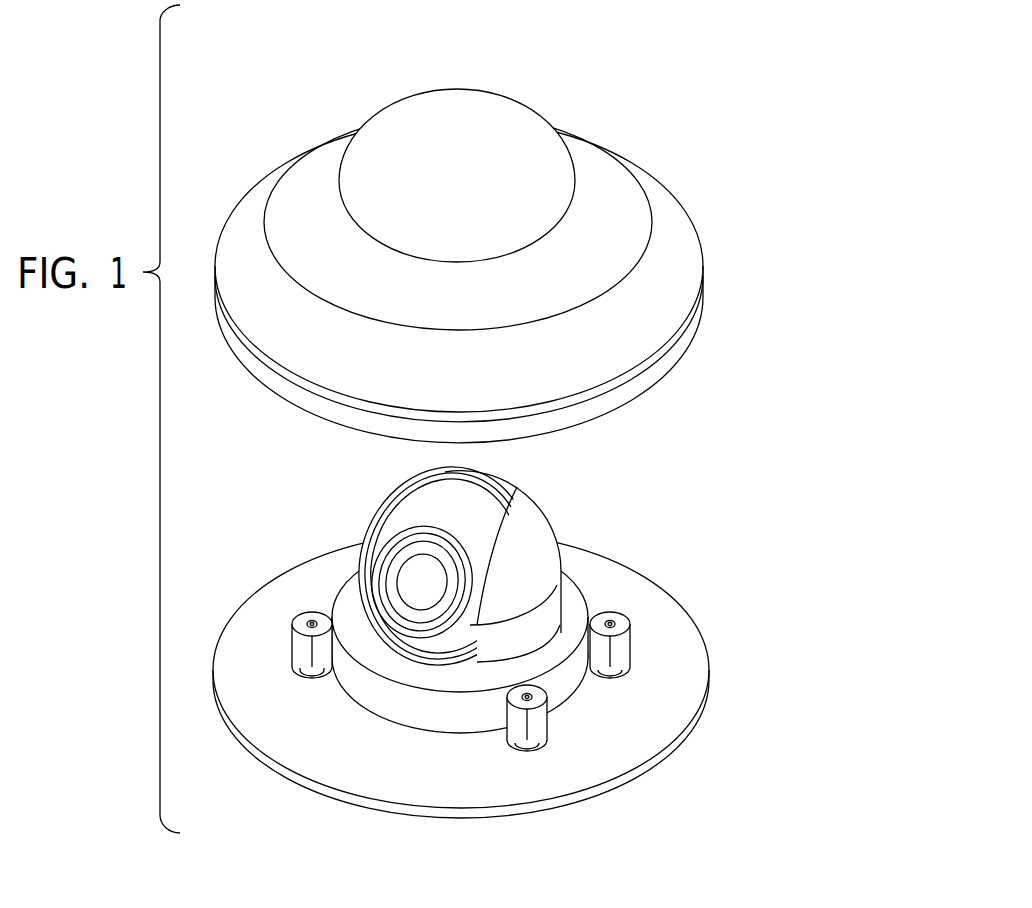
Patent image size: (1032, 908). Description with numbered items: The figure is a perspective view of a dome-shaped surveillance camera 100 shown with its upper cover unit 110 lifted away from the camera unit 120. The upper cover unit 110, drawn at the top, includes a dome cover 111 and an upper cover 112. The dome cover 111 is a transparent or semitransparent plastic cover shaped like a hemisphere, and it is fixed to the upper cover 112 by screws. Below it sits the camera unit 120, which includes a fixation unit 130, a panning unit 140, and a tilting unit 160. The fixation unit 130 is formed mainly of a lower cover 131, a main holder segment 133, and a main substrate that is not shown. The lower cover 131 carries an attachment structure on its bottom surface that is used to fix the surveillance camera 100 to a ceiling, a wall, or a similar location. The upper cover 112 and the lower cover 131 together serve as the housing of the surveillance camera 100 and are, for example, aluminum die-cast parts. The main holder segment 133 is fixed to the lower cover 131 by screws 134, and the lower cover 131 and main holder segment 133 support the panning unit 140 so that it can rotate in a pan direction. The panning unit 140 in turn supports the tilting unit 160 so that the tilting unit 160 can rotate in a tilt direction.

The surveillance camera 100 is at (771, 58).
The upper cover unit 110 is at (788, 142).
The dome cover 111 is at (537, 191).
The upper cover 112 is at (648, 313).
The camera unit 120 is at (847, 715).
The fixation unit 130 is at (768, 598).
The lower cover 131 is at (622, 745).
The main holder segment 133 is at (567, 684).
The screws 134 is at (625, 622).
The panning unit 140 is at (587, 564).
The tilting unit 160 is at (460, 513).